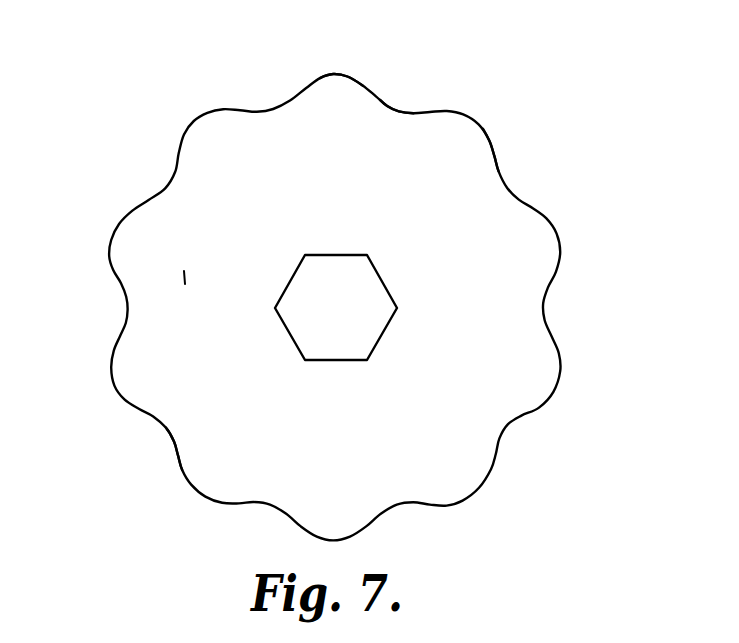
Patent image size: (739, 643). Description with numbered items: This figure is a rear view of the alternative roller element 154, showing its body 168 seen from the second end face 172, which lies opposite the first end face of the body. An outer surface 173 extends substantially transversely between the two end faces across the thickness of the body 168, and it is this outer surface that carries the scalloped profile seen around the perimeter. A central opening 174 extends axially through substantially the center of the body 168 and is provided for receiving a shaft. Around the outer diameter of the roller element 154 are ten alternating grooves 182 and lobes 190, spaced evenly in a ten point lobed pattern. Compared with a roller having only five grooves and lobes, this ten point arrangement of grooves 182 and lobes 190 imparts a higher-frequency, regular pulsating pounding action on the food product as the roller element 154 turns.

The roller element 154 is at (120, 119).
The body 168 is at (188, 442).
The second end face 172 is at (184, 278).
The outer surface 173 is at (495, 157).
The central opening 174 is at (367, 282).
The grooves 182 is at (398, 112).
The lobes 190 is at (343, 74).